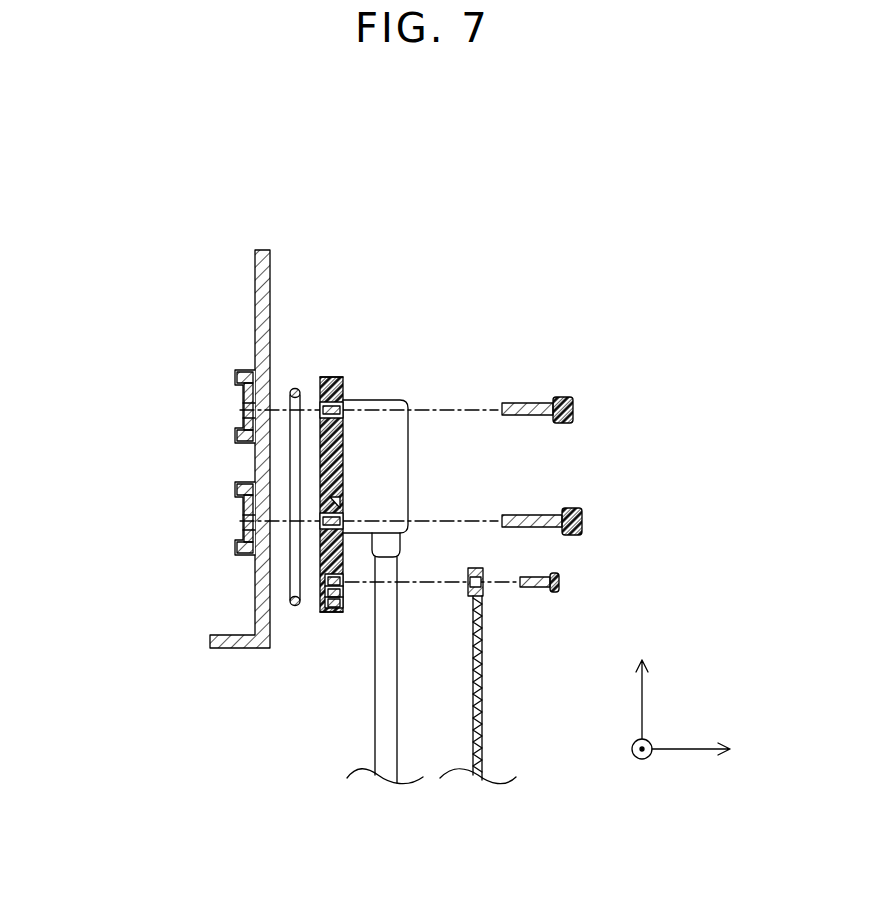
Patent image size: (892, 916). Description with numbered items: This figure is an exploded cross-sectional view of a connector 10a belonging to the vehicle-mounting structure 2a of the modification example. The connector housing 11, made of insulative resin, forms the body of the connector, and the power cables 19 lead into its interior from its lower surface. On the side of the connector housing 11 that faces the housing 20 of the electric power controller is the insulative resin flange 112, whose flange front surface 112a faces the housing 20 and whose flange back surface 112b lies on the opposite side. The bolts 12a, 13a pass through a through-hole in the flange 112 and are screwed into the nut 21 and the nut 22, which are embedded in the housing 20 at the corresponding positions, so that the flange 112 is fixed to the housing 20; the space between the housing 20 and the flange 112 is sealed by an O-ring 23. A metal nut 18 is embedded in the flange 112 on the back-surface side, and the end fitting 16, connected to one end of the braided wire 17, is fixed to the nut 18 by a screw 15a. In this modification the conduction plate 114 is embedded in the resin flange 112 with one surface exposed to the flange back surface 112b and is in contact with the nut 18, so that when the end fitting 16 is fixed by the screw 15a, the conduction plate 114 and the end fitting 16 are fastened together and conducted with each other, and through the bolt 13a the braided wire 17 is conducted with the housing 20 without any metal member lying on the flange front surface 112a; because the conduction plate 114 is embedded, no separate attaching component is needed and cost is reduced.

The vehicle-mounting structure 2a is at (420, 232).
The housing 20 is at (255, 283).
The nut 21 is at (240, 395).
The nut 22 is at (240, 508).
The O-ring 23 is at (294, 388).
The connector housing 11 is at (345, 384).
The flange 112 is at (330, 377).
The flange front surface 112a is at (322, 599).
The flange back surface 112b is at (380, 400).
The conduction plate 114 is at (345, 512).
The connector 10a is at (407, 391).
The bolt 12a is at (573, 409).
The bolt 13a is at (582, 521).
The screw 15a is at (558, 582).
The end fitting 16 is at (483, 596).
The braided wire 17 is at (478, 705).
The nut 18 is at (343, 597).
The power cable 19 is at (375, 720).